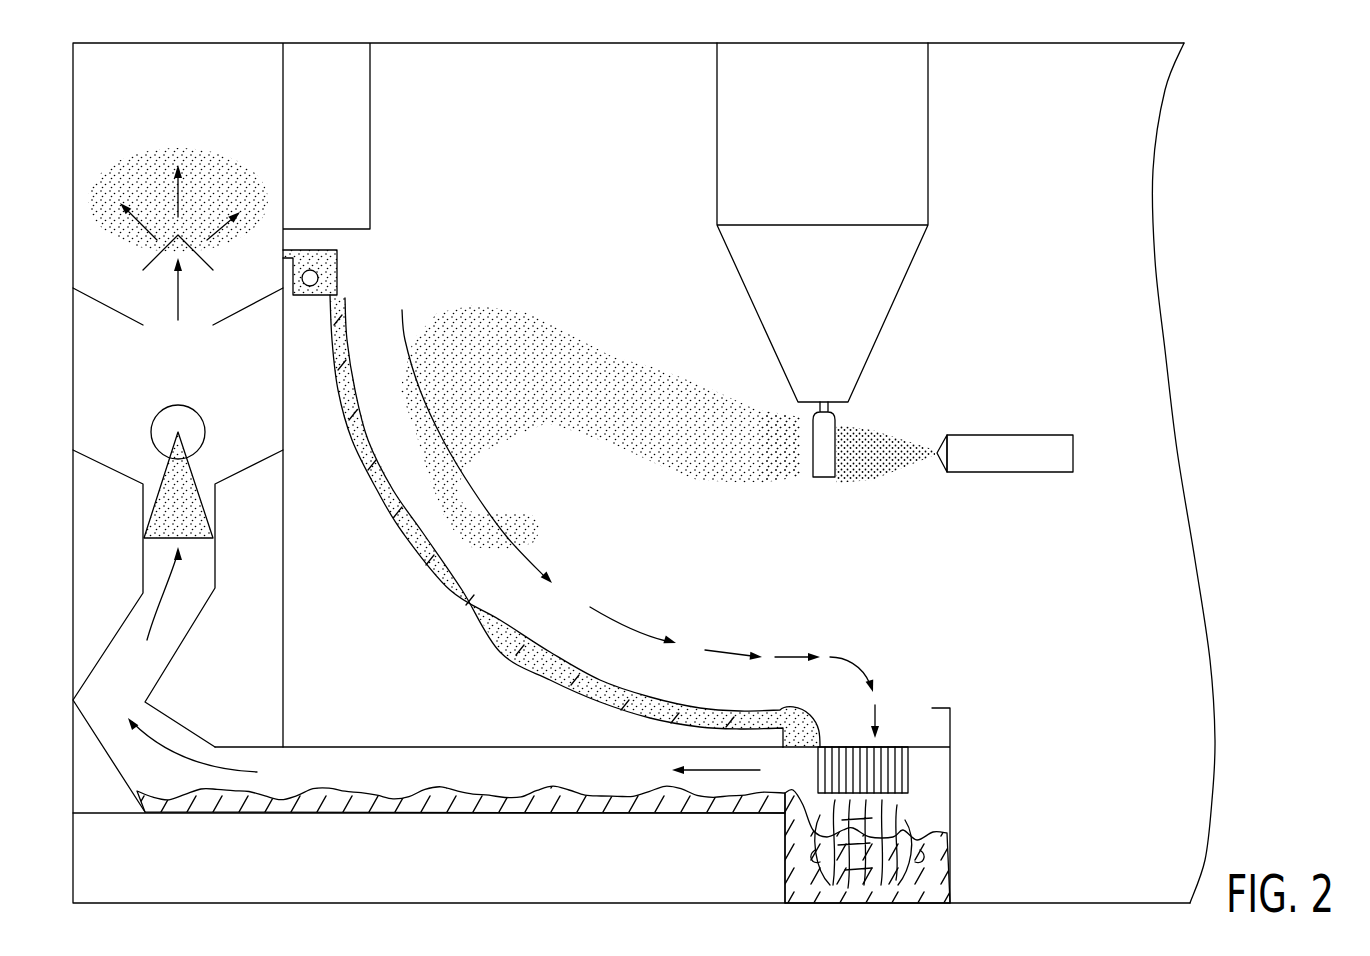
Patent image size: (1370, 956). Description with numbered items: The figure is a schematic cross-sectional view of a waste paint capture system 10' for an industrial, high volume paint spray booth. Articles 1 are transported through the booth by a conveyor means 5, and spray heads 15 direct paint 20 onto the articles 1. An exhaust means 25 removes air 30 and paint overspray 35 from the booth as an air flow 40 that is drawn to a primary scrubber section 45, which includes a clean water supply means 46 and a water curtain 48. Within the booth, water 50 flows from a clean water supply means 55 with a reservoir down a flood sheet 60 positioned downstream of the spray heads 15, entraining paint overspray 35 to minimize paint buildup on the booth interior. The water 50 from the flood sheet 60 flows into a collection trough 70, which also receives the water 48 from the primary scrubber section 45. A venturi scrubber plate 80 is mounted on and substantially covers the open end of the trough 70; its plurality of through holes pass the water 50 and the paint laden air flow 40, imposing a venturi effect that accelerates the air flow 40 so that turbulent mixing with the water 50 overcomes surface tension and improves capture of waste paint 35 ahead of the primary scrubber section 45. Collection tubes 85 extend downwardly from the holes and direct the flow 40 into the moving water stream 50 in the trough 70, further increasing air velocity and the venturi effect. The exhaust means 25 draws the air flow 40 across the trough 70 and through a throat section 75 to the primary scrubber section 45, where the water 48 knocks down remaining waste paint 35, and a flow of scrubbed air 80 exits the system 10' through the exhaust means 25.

The waste paint capture system 10' is at (644, 473).
The conveyor means 5 is at (818, 317).
The articles 1 is at (825, 465).
The paint 20 is at (882, 458).
The spray heads 15 is at (1013, 455).
The paint overspray 35 is at (643, 453).
The air 30 is at (403, 325).
The air flow 40 is at (628, 627).
The water 50 is at (575, 521).
The flood sheet 60 is at (440, 582).
The clean water supply means 55 is at (313, 278).
The venturi scrubber plate 80 is at (180, 202).
The exhaust means 25 is at (198, 262).
The primary scrubber section 45 is at (203, 504).
The clean water supply means 46 is at (207, 432).
The water curtain 48 is at (187, 470).
The throat section 75 is at (469, 782).
The collection trough 70 is at (935, 818).
The collection tubes 85 is at (885, 778).